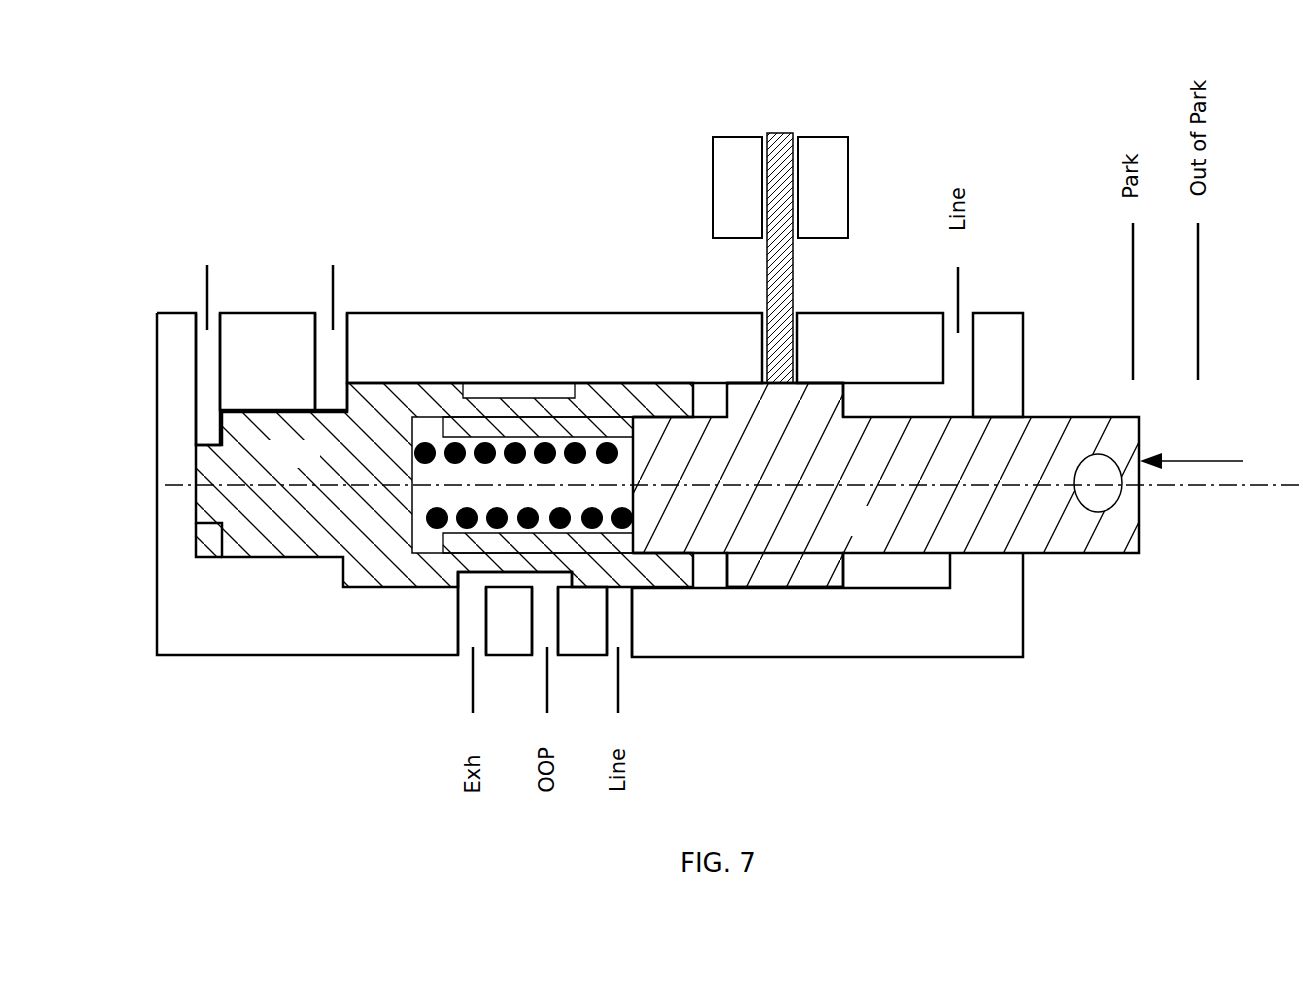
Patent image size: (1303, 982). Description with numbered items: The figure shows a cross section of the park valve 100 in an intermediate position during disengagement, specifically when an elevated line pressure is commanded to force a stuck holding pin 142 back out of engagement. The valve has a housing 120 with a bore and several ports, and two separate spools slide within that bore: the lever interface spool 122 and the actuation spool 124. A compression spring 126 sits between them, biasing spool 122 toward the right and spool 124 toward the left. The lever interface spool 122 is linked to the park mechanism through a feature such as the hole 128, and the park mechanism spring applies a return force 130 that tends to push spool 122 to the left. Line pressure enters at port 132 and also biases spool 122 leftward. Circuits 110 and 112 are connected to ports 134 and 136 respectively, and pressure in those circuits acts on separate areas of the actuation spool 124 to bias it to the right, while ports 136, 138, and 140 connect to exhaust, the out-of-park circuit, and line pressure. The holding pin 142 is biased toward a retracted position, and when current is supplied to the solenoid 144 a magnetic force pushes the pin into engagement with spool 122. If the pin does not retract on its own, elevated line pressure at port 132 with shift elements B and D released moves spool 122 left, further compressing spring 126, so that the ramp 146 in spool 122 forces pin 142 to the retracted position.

The park valve 100 is at (533, 92).
The circuit 110 is at (333, 215).
The circuit 112 is at (207, 213).
The housing 120 is at (597, 313).
The lever interface spool 122 is at (880, 533).
The actuation spool 124 is at (315, 465).
The compression spring 126 is at (437, 530).
The hole 128 is at (1100, 512).
The return force 130 is at (1208, 461).
The port 132 is at (958, 333).
The port 134 is at (335, 370).
The port 136 is at (208, 362).
The port 138 is at (543, 625).
The port 140 is at (618, 625).
The holding pin 142 is at (767, 277).
The solenoid 144 is at (712, 173).
The ramp 146 is at (782, 570).